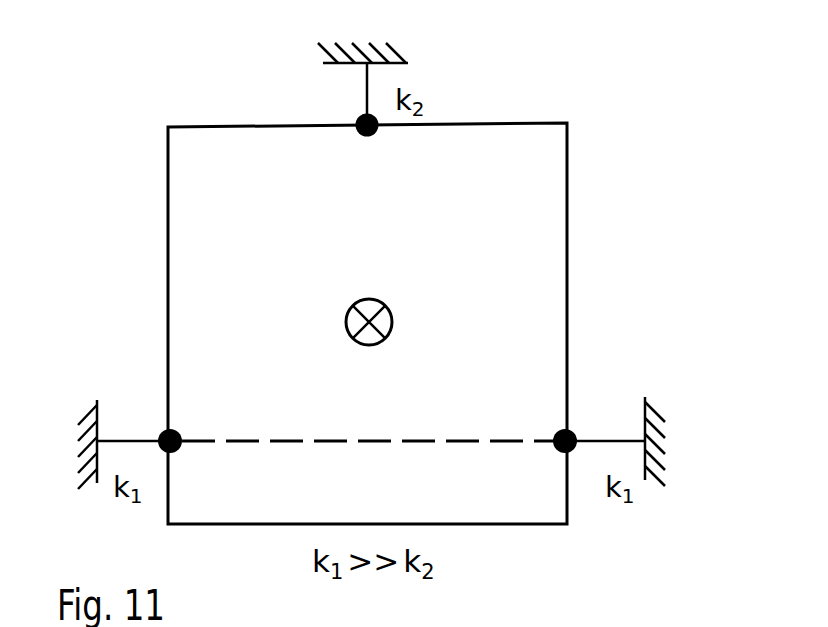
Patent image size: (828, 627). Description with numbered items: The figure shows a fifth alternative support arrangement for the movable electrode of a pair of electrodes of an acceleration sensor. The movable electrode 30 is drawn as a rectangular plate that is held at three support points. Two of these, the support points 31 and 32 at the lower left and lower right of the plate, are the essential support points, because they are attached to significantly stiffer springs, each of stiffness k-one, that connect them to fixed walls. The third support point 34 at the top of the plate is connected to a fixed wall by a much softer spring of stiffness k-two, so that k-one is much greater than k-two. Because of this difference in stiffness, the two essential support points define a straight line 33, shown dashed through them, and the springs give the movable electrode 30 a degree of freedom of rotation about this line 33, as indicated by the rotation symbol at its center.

The mass / rigid body 30 is at (567, 198).
The right pivot joint with stiff spring k1 31 is at (573, 432).
The left pivot joint with stiff spring k1 32 is at (162, 432).
The rotation axis (dashed line) 33 is at (474, 441).
The top pivot joint with soft spring k2 34 is at (358, 117).